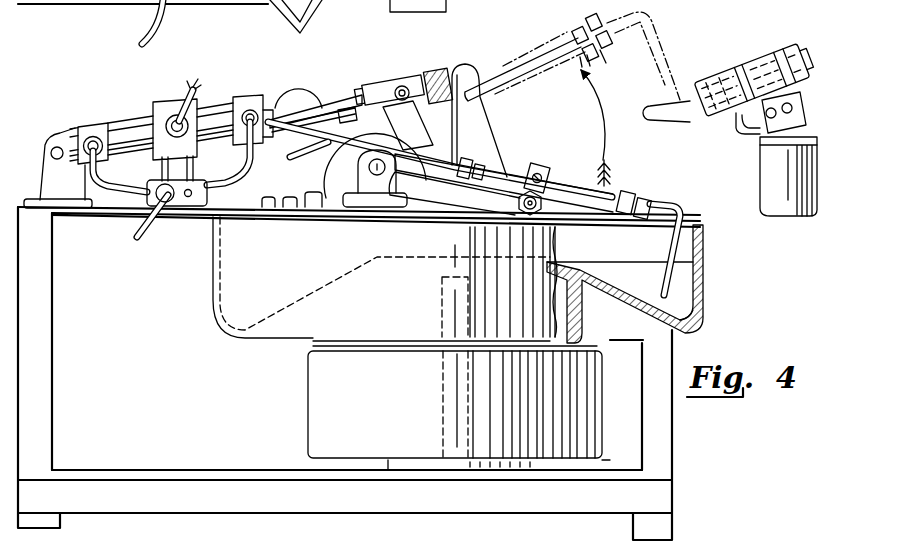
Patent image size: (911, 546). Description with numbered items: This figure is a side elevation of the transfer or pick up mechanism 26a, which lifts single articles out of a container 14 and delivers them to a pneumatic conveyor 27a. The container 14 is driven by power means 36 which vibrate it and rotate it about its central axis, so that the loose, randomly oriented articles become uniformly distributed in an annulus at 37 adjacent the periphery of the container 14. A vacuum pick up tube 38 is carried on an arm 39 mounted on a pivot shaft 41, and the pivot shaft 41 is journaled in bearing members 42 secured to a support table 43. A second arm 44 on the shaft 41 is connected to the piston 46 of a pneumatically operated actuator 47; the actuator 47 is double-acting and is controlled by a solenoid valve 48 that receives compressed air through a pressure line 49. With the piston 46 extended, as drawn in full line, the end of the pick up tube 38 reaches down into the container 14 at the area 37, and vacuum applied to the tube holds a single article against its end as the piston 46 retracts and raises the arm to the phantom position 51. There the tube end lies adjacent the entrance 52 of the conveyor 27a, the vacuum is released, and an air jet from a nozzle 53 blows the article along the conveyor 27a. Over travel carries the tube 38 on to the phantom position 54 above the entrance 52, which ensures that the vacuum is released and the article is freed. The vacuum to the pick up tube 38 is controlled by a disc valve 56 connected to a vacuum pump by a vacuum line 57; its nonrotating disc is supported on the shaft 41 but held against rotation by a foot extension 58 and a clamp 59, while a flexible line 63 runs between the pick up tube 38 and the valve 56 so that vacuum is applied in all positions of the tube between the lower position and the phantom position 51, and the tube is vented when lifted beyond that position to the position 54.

The container 14 is at (700, 268).
The transfer or pick up mechanism 26a is at (714, 301).
The pneumatic conveyor 27a is at (783, 48).
The power means 36 is at (318, 387).
The annulus 37 is at (693, 323).
The vacuum pick up tube 38 is at (673, 263).
The arm 39 is at (497, 190).
The pivot shaft 41 is at (377, 175).
The bearing members 42 is at (385, 190).
The support table 43 is at (200, 215).
The second arm 44 is at (402, 112).
The piston 46 is at (342, 97).
The pneumatically operated actuator 47 is at (218, 103).
The solenoid valve 48 is at (156, 107).
The pressure line 49 is at (147, 23).
The phantom position 51 is at (609, 58).
The entrance 52 is at (706, 118).
The nozzle 53 is at (666, 121).
The phantom position 54 is at (597, 17).
The disc valve 56 is at (432, 140).
The vacuum line 57 is at (297, 160).
The foot extension 58 is at (316, 210).
The clamp 59 is at (277, 207).
The flexible line 63 is at (297, 97).